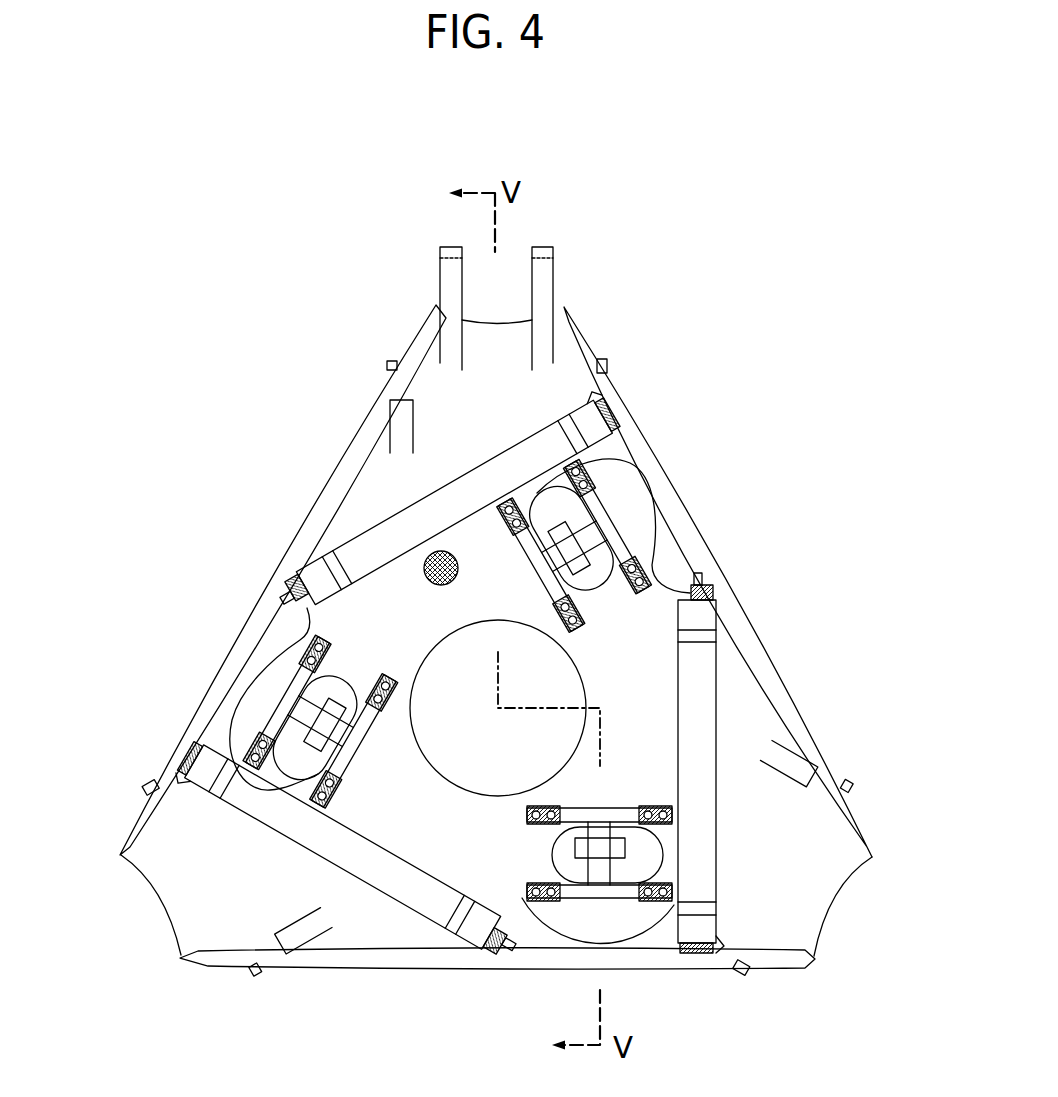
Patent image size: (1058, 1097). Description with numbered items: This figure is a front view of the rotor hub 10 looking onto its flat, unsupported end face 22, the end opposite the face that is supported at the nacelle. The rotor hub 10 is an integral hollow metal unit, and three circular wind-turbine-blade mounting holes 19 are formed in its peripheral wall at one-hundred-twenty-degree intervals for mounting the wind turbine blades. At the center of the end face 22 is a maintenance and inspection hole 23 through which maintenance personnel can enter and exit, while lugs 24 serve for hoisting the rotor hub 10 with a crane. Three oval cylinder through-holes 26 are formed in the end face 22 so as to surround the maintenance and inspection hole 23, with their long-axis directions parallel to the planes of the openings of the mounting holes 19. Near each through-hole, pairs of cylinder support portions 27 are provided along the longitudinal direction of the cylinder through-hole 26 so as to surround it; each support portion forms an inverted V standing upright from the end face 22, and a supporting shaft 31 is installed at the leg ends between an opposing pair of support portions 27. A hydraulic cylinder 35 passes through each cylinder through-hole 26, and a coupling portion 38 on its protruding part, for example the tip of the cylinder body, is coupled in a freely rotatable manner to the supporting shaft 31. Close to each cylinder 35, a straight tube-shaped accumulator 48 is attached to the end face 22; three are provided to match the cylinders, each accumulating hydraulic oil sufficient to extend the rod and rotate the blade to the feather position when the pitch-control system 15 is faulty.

The rotor hub 10 is at (388, 327).
The pitch-control system 15 is at (648, 428).
The wind-turbine-blade mounting hole 19 is at (700, 540).
The end face 22 is at (428, 556).
The maintenance and inspection hole 23 is at (440, 758).
The lug 24 is at (553, 277).
The cylinder through-hole 26 is at (550, 490).
The cylinder support portion 27 is at (626, 550).
The supporting shaft 31 is at (320, 693).
The cylinder 35 is at (558, 842).
The coupling portion 38 is at (343, 700).
The accumulator 48 is at (460, 490).